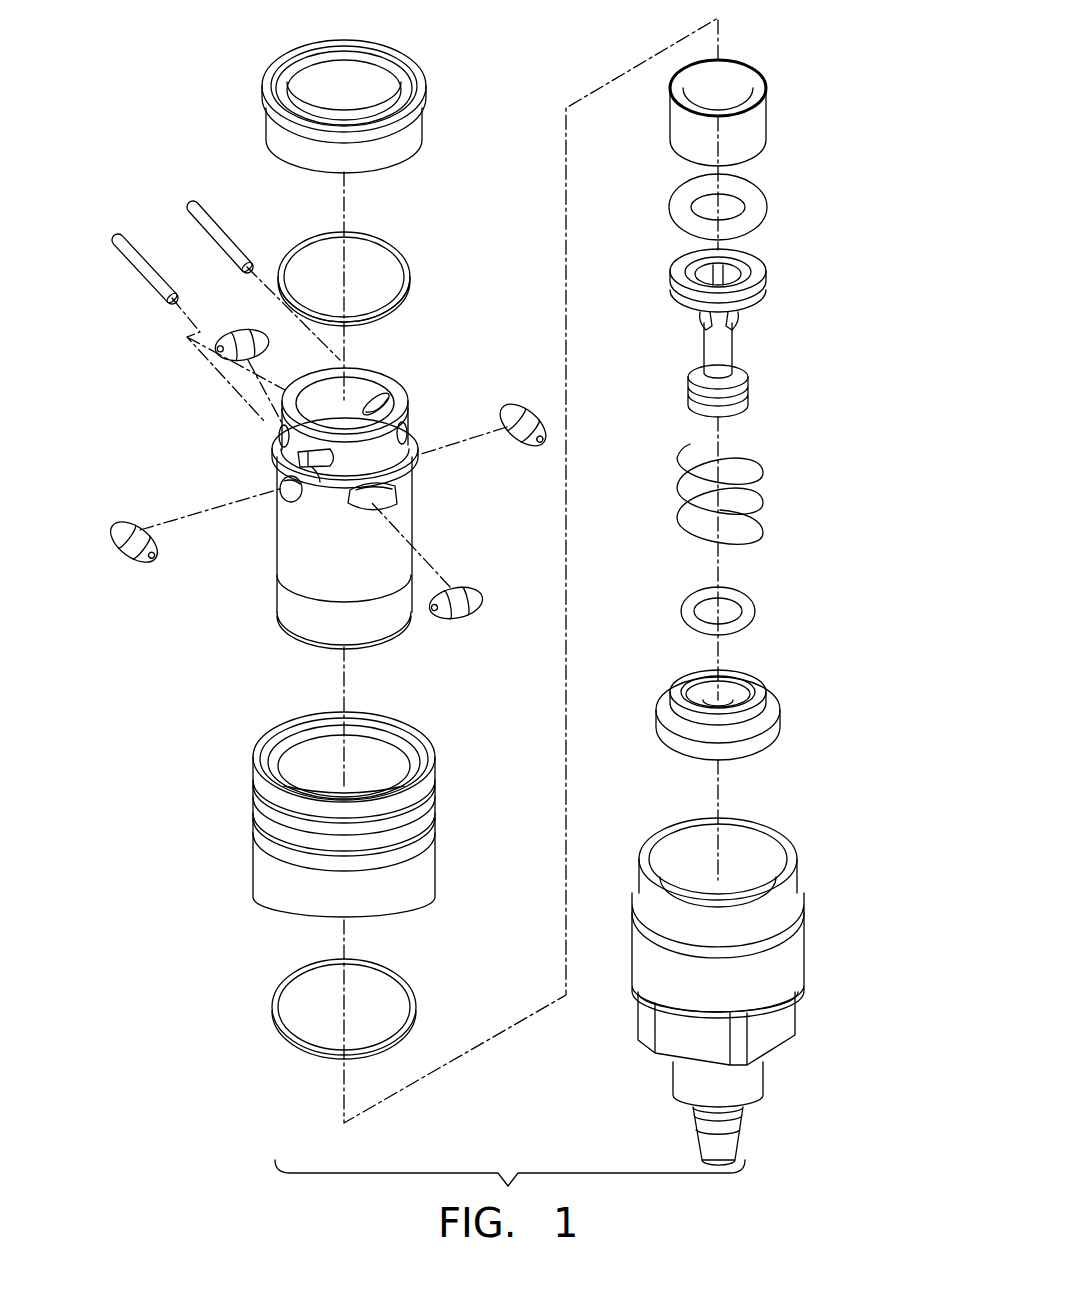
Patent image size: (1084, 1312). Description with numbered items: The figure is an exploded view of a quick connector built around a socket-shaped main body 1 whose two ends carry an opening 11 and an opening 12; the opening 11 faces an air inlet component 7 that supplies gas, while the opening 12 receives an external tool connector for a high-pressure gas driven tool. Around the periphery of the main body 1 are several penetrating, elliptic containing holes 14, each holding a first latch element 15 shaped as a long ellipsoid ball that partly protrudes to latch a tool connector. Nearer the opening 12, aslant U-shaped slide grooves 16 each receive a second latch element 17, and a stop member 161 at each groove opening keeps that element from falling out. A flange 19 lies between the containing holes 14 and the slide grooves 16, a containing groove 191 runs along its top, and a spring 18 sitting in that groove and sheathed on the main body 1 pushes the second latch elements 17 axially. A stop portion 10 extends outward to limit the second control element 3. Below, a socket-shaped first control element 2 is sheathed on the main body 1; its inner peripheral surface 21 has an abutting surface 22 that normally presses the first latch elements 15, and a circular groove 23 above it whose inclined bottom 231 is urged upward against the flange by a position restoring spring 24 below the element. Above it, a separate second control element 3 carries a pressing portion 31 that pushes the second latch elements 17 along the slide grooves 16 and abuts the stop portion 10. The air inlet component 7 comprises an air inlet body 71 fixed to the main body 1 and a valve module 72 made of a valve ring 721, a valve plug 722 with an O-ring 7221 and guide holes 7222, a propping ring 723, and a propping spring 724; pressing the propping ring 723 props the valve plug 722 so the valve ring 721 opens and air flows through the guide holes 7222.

The main body 1 is at (347, 506).
The stop portion 10 is at (283, 418).
The opening 11 is at (395, 633).
The opening 12 is at (367, 383).
The containing hole 14 is at (287, 488).
The first latch element 15 is at (232, 328).
The U-shaped slide groove 16 is at (318, 467).
The stop member 161 is at (298, 457).
The second latch element 17 is at (125, 240).
The spring 18 is at (387, 238).
The flange 19 is at (413, 472).
The containing groove 191 is at (418, 452).
The first control element 2 is at (345, 793).
The inner peripheral surface 21 is at (345, 770).
The abutting surface 22 is at (290, 770).
The circular groove 23 is at (300, 732).
The bottom of the circular groove 231 is at (400, 747).
The position restoring spring 24 is at (288, 970).
The second control element 3 is at (366, 95).
The pressing portion 31 is at (367, 60).
The air inlet component 7 is at (737, 612).
The air inlet body 71 is at (699, 991).
The valve module 72 is at (724, 410).
The valve ring 721 is at (698, 712).
The O-ring 7221 is at (690, 598).
The valve plug 722 is at (708, 337).
The guide hole 7222 is at (698, 320).
The propping ring 723 is at (672, 117).
The propping spring 724 is at (678, 480).